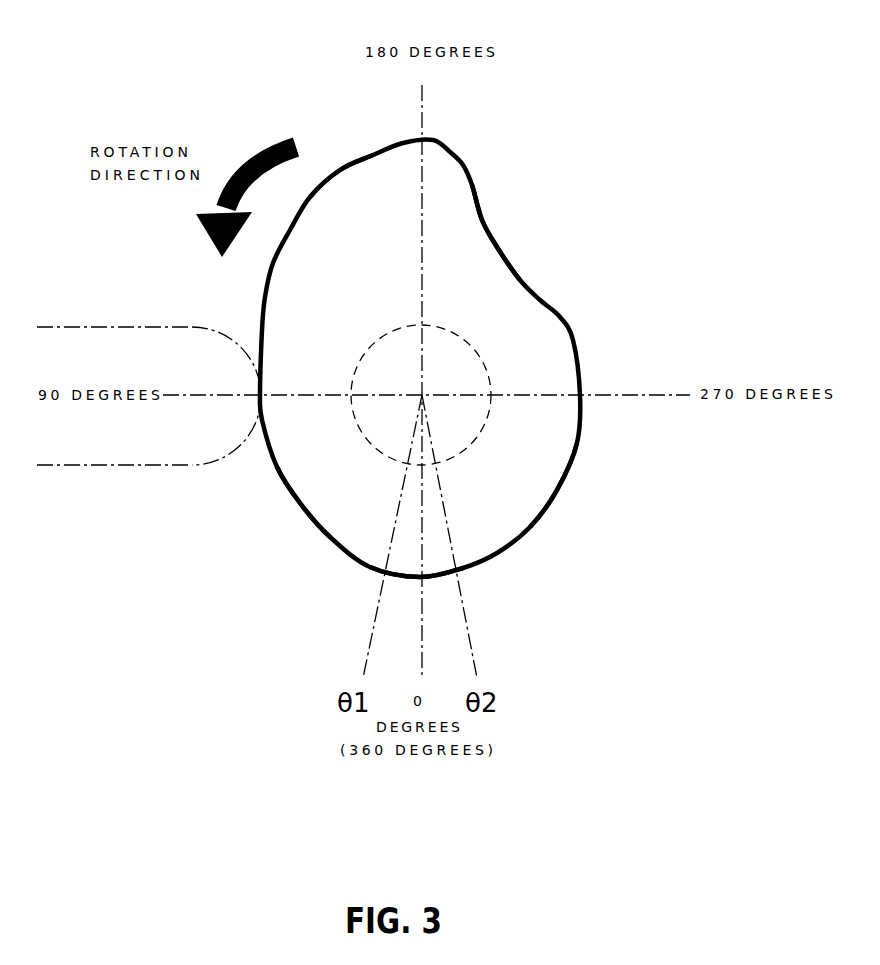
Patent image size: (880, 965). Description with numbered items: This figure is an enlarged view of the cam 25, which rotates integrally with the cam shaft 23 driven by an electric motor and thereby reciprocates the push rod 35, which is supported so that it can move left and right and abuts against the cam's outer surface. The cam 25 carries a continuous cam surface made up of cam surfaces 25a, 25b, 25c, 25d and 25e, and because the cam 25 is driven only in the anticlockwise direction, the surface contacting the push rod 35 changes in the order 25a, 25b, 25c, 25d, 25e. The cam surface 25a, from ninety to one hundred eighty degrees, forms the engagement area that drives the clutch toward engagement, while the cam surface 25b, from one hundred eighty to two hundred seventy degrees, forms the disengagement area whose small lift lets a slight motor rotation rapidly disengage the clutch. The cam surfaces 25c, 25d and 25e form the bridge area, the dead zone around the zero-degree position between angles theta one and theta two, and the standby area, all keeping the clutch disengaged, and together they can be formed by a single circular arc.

The cam 25 is at (465, 138).
The cam surface 25a is at (337, 173).
The cam surface 25b is at (493, 238).
The cam surface 25c is at (528, 525).
The cam surface 25d is at (435, 578).
The cam surface 25e is at (302, 510).
The cam shaft 23 is at (472, 348).
The push rod 35 is at (110, 465).